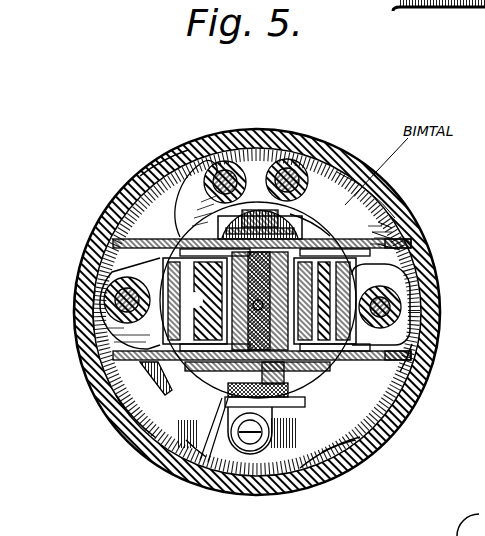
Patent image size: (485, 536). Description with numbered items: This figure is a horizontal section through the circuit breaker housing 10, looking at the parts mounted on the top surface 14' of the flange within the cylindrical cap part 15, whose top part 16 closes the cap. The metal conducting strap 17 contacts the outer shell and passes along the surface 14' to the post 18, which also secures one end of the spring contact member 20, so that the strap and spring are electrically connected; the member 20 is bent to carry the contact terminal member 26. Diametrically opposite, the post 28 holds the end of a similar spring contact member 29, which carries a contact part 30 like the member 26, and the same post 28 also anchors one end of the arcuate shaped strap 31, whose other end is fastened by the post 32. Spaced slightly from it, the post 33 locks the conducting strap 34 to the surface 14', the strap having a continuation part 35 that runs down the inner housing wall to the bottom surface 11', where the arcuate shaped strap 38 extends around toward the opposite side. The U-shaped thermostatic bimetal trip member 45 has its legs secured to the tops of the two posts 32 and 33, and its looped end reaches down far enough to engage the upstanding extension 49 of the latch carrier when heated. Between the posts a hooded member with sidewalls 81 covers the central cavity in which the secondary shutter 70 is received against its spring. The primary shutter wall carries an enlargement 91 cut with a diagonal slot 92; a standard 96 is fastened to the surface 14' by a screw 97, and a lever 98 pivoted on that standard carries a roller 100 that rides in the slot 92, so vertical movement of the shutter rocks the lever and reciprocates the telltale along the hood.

The housing 10 is at (108, 210).
The cap part 15 is at (394, 416).
The spring contact member 29 is at (413, 337).
The spring contact member 20 is at (92, 280).
The top surface of flange 14' is at (330, 470).
The arcuate shaped strap 31 is at (358, 218).
The contact part 30 is at (322, 229).
The thermostatic bimetal trip member 45 is at (300, 215).
The surface of the bottom of part 11 11' is at (367, 199).
The post 33 is at (233, 142).
The post 32 is at (297, 172).
The conducting strap 34 is at (180, 148).
The continuation part 35 is at (184, 214).
The upstanding extension 49 is at (262, 212).
The contact terminal member 26 is at (262, 299).
The sidewalls 81 is at (412, 245).
The top part of the cap 16 is at (222, 336).
The post 18 is at (110, 318).
The post 28 is at (402, 308).
The arcuate shaped strap 38 is at (300, 390).
The enlargement 91 is at (358, 368).
The roller 100 is at (277, 397).
The diagonal slot 92 is at (340, 442).
The secondary shutter 70 is at (204, 378).
The metal conducting strap 17 is at (150, 385).
The screw 97 is at (250, 452).
The standard 96 is at (217, 467).
The lever 98 is at (200, 462).